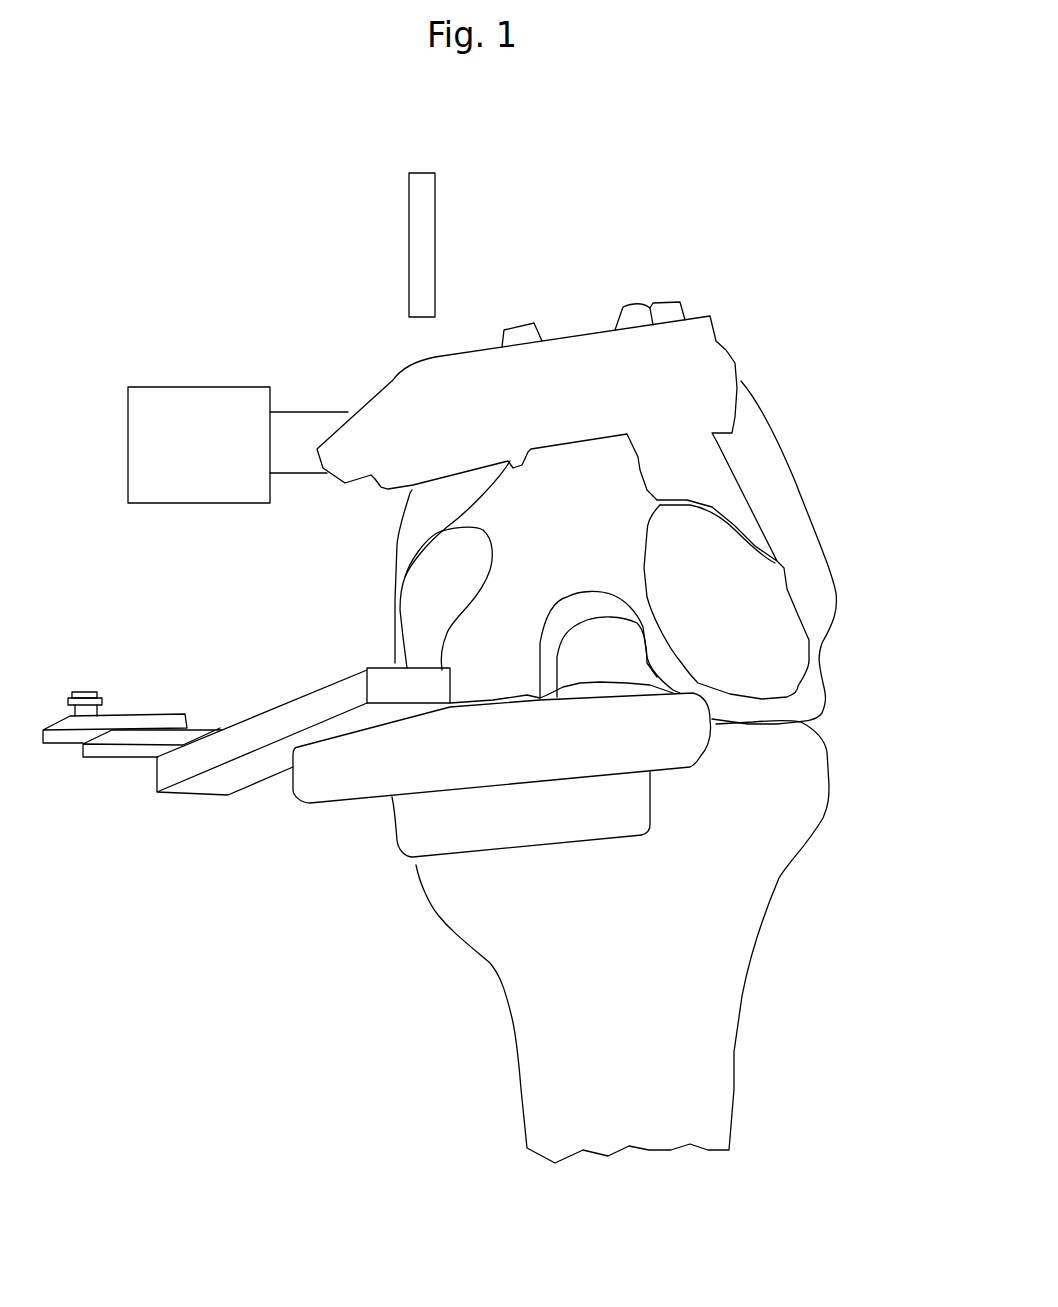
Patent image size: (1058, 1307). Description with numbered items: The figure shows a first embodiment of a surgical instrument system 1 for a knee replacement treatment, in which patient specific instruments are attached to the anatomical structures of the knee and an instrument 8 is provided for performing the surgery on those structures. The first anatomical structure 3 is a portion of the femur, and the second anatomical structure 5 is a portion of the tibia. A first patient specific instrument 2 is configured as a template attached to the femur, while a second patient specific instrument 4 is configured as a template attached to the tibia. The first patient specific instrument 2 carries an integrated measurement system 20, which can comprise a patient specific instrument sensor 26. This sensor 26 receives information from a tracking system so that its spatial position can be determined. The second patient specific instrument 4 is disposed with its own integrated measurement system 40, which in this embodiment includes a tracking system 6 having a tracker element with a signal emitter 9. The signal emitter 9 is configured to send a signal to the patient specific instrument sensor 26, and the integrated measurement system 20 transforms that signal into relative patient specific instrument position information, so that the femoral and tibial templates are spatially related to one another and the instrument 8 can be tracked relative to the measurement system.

The surgical instrument system 1 is at (727, 273).
The first patient specific instrument 2 is at (716, 379).
The first anatomical structure 3 is at (798, 519).
The second patient specific instrument 4 is at (660, 743).
The second anatomical structure 5 is at (712, 898).
The tracking system 6 is at (105, 673).
The instrument 8 is at (435, 217).
The signal emitter 9 is at (92, 700).
The integrated measurement system 20 is at (238, 445).
The patient specific instrument sensor 26 is at (205, 407).
The integrated measurement system 40 is at (97, 780).